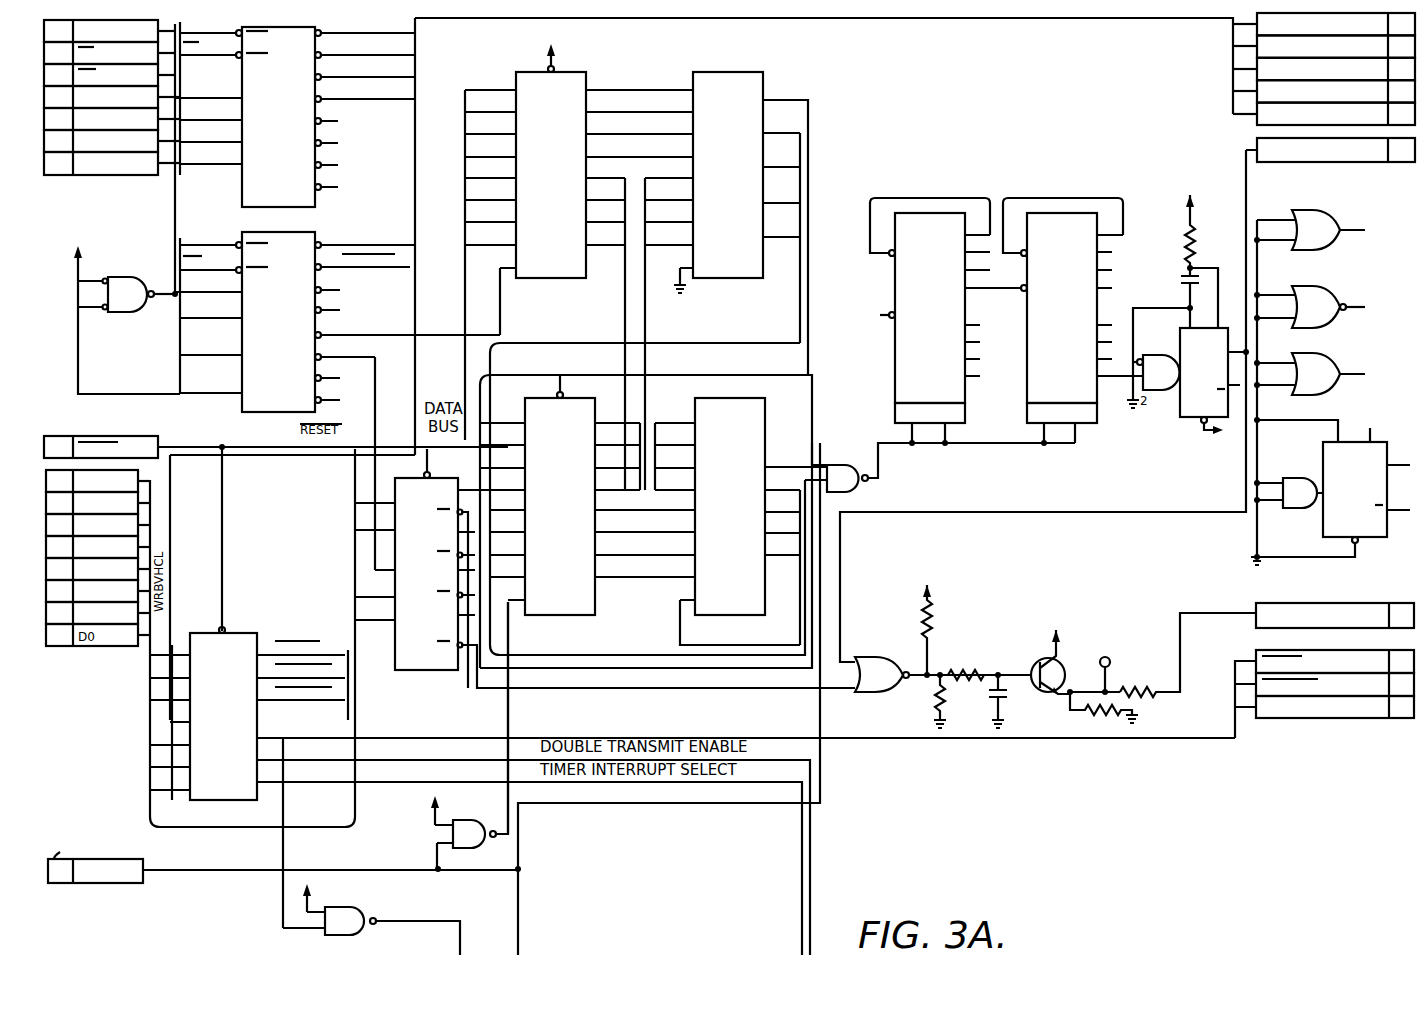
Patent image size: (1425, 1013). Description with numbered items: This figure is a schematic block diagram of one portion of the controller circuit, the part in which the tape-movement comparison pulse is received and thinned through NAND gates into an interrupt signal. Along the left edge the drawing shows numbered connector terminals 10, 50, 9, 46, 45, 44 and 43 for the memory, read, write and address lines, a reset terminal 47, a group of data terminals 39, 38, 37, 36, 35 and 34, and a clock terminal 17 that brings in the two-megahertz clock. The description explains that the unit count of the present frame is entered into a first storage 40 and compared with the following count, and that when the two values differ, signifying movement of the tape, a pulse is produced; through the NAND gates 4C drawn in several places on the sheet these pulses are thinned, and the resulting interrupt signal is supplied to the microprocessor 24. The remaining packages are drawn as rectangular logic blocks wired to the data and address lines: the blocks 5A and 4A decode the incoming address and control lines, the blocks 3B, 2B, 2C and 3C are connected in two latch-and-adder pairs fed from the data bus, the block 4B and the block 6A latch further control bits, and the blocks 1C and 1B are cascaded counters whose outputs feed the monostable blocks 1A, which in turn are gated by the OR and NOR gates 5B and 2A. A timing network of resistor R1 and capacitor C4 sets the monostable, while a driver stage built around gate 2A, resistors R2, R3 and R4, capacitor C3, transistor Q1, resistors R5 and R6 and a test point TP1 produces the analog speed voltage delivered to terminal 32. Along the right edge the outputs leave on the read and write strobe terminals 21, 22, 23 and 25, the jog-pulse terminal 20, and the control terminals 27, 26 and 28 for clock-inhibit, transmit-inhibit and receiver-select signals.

The MEMIO connector pin 10 is at (109, 31).
The RD connector pin 50 is at (109, 53).
The WR connector pin 9 is at (109, 75).
The A10 connector pin 46 is at (112, 97).
The A4 connector pin 45 is at (112, 119).
The A3 connector pin 44 is at (112, 141).
The A2 connector pin 43 is at (112, 163).
The RESET connector pin 47 is at (101, 447).
The first storage 40 is at (98, 481).
The D6 connector pin 39 is at (98, 503).
The D5 connector pin 38 is at (98, 525).
The D4 connector pin 37 is at (98, 547).
The D3 connector pin 36 is at (98, 569).
The D2 connector pin 35 is at (98, 591).
The D1 connector pin 34 is at (98, 613).
The 2MHZ clock connector pin 17 is at (95, 860).
The RD BVH RMO connector pin 21 is at (1324, 24).
The RD BVH RM4 connector pin 22 is at (1324, 46).
The RD BVH TMO connector pin 23 is at (1324, 69).
The microprocessor 24 is at (1324, 91).
The WR BVH RMO connector pin 25 is at (1324, 114).
The JOG PULSES connector pin 20 is at (1330, 150).
The BVH SPEED VOL connector pin 32 is at (1335, 615).
The CKINH connector pin 27 is at (1335, 661).
The XMIT INH connector pin 26 is at (1335, 684).
The RC VR SEL connector pin 28 is at (1335, 707).
The 74LS138 decoder 5A is at (295, 124).
The 74LS138 decoder 4A is at (325, 332).
The 74LS00 NAND gate 4C is at (570, 595).
The 74LS273 latch 3B is at (579, 165).
The 74LS283 adder 2B is at (726, 223).
The 74LS273 latch 2C is at (587, 508).
The 74LS283 adder 3C is at (741, 521).
The 74LS175 flip-flop 4B is at (605, 575).
The 74LS174 flip-flop 6A is at (692, 785).
The 74LS393 counter 1C is at (946, 332).
The 74LS393 counter 1B is at (1073, 332).
The 74LS123 monostable 1A is at (1279, 435).
The 74LS32 OR gate 5B is at (1311, 309).
The 74LS32 NOR gate / 75454 driver 2A is at (1104, 497).
The resistor R1 is at (1197, 226).
The resistor R2 is at (932, 621).
The resistor R3 is at (949, 701).
The resistor R4 is at (966, 667).
The resistor R5 is at (1104, 712).
The resistor R6 is at (1188, 655).
The capacitor C3 is at (1006, 701).
The capacitor C4 is at (1179, 302).
The transistor Q1 is at (1050, 653).
The test point TP1 is at (1095, 668).